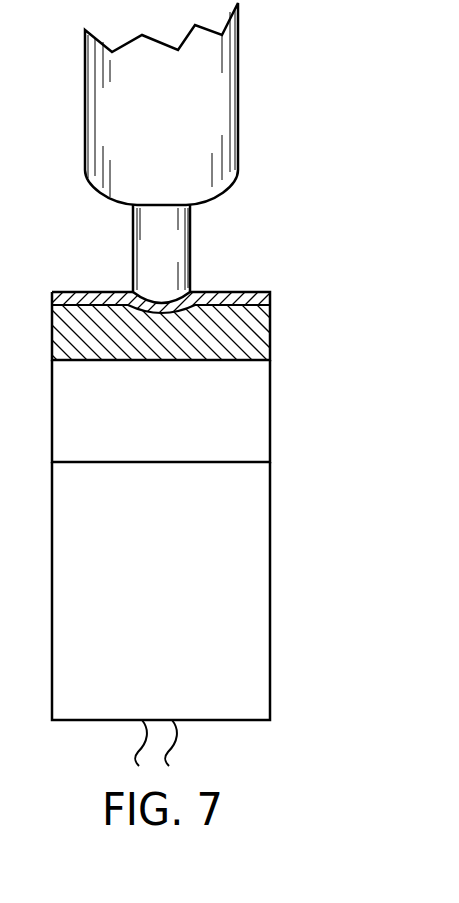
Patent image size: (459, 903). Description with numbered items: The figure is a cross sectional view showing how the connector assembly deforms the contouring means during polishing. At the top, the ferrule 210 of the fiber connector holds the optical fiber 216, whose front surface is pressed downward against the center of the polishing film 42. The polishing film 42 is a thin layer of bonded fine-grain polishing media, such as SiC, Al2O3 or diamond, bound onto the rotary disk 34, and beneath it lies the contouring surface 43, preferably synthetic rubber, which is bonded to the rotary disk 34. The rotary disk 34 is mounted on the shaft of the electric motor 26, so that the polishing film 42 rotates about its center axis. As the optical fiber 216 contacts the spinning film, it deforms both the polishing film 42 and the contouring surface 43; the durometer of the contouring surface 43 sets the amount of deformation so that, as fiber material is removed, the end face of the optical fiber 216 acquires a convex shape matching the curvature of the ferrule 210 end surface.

The ferrule 210 is at (223, 93).
The optical fiber 216 is at (190, 232).
The polishing film 42 is at (271, 297).
The contouring surface 43 is at (271, 340).
The rotary disk 34 is at (271, 414).
The electric motor 26 is at (271, 574).